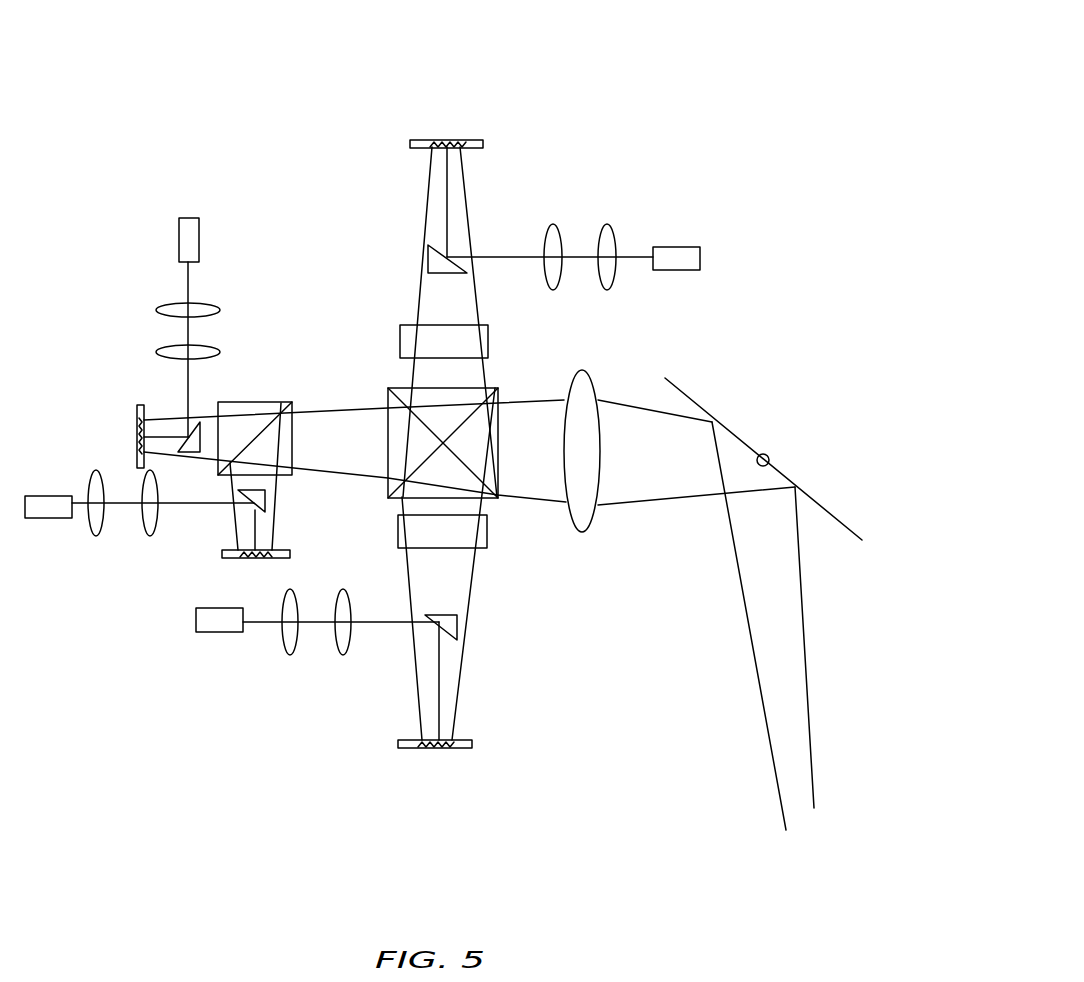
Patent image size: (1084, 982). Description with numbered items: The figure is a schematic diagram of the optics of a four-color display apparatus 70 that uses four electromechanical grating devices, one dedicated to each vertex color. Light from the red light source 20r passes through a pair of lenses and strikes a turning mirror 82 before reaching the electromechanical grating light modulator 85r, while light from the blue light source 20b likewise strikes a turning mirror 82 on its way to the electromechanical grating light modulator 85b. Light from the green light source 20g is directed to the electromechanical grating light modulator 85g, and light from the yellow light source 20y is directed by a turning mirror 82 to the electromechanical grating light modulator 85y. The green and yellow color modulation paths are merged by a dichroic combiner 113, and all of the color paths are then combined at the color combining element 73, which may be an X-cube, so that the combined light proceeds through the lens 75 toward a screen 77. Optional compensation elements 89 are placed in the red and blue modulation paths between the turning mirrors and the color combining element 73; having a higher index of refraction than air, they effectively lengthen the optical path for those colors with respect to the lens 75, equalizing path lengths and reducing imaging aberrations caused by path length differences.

The display apparatus 70 is at (490, 80).
The electromechanical grating light modulator 85r is at (415, 140).
The turning mirror 82 is at (428, 250).
The red light source 20r is at (690, 247).
The compensation element 89 is at (400, 330).
The color combining element 73 is at (496, 388).
The lens 75 is at (582, 535).
The screen 77 is at (692, 397).
The dichroic combiner 113 is at (238, 402).
The green light source 20g is at (179, 240).
The electromechanical grating light modulator 85g is at (137, 408).
The yellow light source 20y is at (43, 518).
The electromechanical grating light modulator 85y is at (227, 557).
The blue light source 20b is at (196, 620).
The electromechanical grating light modulator 85b is at (398, 747).